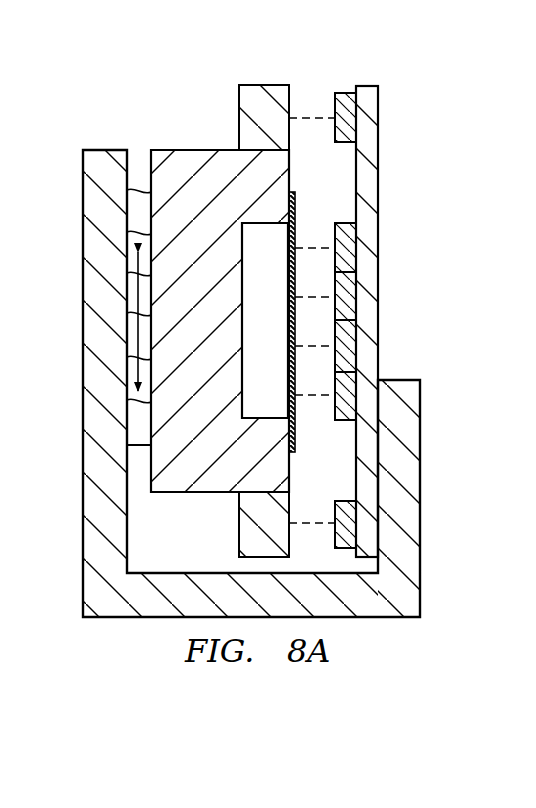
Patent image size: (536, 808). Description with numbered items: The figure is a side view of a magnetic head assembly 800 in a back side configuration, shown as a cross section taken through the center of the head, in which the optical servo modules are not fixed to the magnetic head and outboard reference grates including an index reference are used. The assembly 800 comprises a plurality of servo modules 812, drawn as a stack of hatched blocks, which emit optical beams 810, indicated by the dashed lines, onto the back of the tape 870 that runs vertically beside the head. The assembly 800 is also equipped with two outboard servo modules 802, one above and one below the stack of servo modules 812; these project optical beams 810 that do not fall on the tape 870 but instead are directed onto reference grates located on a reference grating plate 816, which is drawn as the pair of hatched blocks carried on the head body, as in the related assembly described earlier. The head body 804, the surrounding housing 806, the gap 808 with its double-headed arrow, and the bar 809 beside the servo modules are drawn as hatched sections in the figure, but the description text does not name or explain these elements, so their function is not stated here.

The assembly 800 is at (160, 60).
The outboard servo module 802 is at (340, 95).
The movable lens carrier 804 is at (205, 157).
The housing 806 is at (99, 157).
The gap / bellows spring 808 is at (131, 197).
The return bar 809 is at (371, 181).
The optical beam 810 is at (312, 117).
The servo module 812 is at (350, 255).
The reference grating plate 816 is at (261, 90).
The tape 870 is at (290, 214).